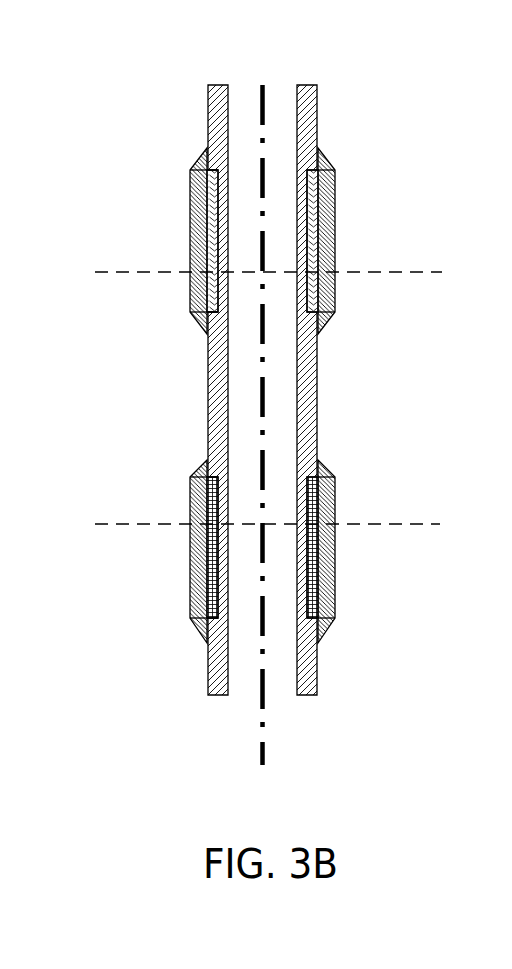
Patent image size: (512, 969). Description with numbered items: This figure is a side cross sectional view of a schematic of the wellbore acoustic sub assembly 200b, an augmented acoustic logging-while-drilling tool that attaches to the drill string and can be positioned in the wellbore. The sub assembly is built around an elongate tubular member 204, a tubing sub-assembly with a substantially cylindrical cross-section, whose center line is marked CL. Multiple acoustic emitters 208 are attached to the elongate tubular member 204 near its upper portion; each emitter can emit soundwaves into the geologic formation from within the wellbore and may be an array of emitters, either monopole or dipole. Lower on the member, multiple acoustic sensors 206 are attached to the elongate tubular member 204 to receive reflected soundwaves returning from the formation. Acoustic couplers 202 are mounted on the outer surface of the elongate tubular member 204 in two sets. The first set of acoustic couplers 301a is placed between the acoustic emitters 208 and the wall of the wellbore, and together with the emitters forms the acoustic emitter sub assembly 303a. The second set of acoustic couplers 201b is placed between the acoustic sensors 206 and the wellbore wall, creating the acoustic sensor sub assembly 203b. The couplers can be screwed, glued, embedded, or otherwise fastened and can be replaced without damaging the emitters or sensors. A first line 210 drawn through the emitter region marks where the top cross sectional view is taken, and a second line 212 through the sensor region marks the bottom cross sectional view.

The wellbore acoustic sub assembly 200b is at (106, 157).
The acoustic coupler 202 is at (192, 258).
The elongate tubular member 204 is at (207, 406).
The acoustic sensor 206 is at (210, 545).
The acoustic emitter 208 is at (320, 233).
The first line 210 is at (380, 276).
The second line 212 is at (440, 524).
The second set of acoustic couplers 201b is at (348, 498).
The acoustic sensor sub assembly 203b is at (174, 542).
The first set of acoustic couplers 301a is at (352, 224).
The acoustic emitter sub assembly 303a is at (225, 241).